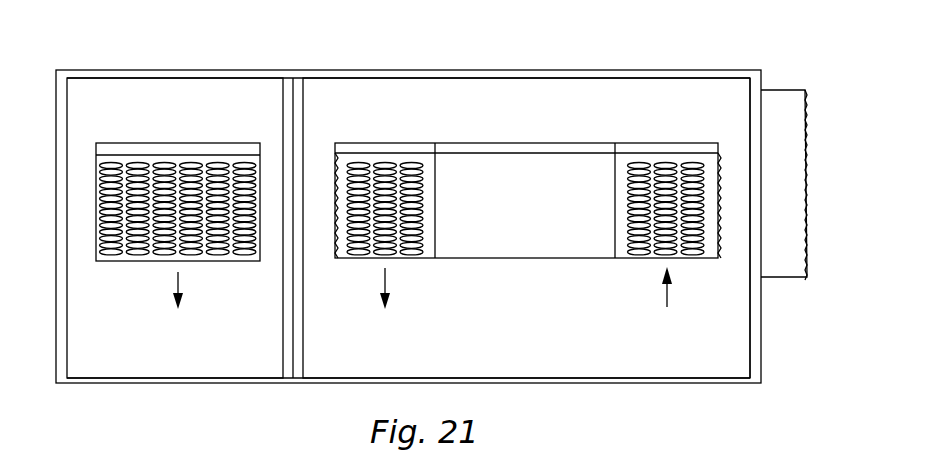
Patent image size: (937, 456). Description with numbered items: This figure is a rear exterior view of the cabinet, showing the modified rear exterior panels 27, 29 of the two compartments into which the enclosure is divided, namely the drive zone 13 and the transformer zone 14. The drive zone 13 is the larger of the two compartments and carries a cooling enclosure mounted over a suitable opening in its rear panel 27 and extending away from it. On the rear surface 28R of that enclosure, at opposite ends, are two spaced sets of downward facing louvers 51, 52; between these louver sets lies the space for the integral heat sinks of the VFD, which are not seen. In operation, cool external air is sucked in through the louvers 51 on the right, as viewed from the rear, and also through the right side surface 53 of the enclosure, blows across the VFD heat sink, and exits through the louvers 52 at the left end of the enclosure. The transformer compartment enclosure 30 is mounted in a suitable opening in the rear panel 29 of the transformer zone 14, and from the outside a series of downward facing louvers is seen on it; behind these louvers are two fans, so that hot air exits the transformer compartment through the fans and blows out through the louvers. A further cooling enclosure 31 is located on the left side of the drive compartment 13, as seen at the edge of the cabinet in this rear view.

The transformer zone 14 is at (118, 46).
The drive zone 13 is at (677, 46).
The transformer compartment enclosure 30 is at (96, 213).
The rear exterior panel 29 is at (168, 357).
The rear surface of the enclosure 28R is at (522, 226).
The louvers 52 is at (360, 268).
The louvers 51 is at (641, 268).
The right side surface of the enclosure 53 is at (669, 208).
The rear exterior panel 27 is at (565, 353).
The cooling enclosure 31 is at (825, 298).